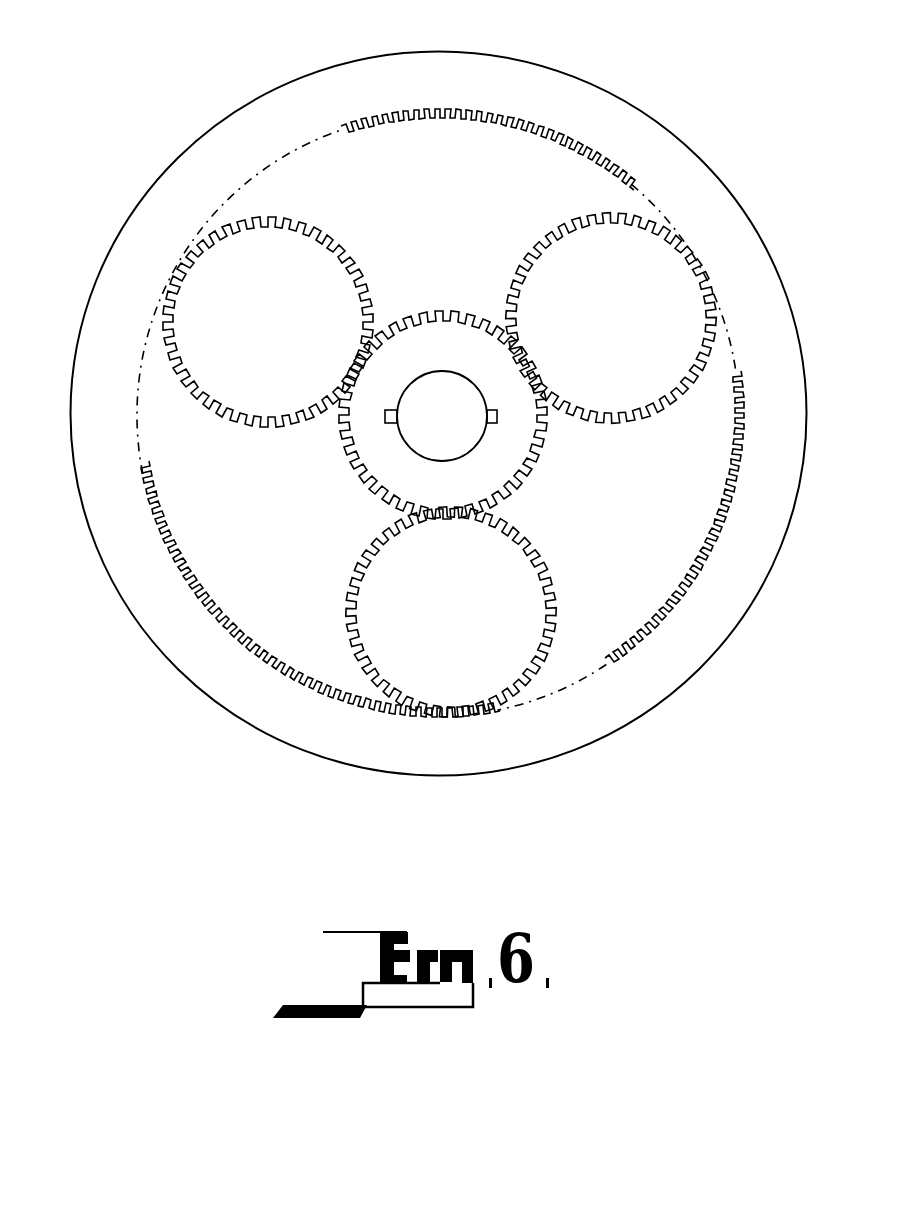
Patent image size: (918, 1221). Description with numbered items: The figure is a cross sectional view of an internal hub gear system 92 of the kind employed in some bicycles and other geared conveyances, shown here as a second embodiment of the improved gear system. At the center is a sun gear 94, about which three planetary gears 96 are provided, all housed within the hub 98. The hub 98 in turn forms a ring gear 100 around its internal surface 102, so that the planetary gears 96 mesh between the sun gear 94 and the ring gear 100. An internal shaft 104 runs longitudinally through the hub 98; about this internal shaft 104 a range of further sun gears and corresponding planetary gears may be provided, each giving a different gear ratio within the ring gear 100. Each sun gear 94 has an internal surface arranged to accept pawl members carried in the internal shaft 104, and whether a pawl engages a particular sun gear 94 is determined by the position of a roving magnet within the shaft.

The internal hub gear system 92 is at (176, 136).
The sun gear 94 is at (422, 313).
The planetary gears 96 is at (210, 307).
The hub 98 is at (686, 663).
The ring gear 100 is at (723, 488).
The internal surface 102 is at (693, 575).
The internal shaft 104 is at (467, 433).